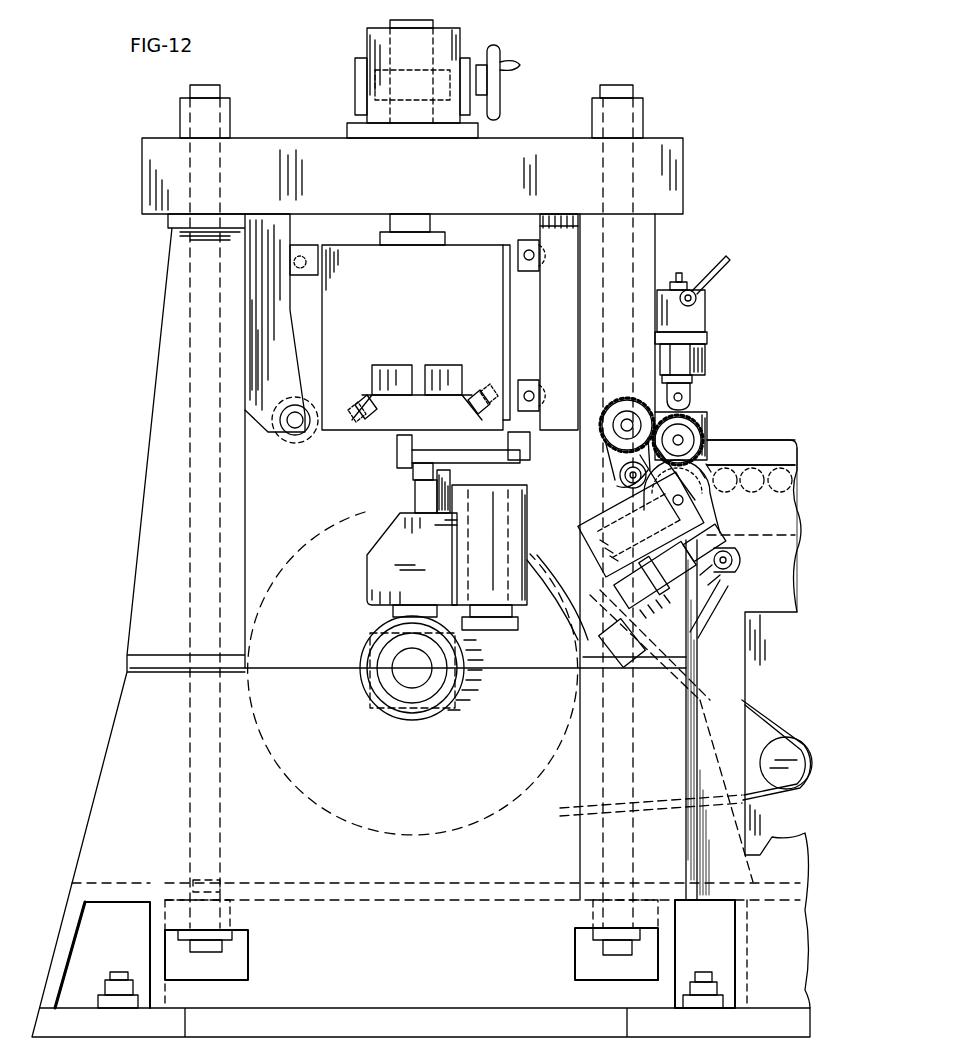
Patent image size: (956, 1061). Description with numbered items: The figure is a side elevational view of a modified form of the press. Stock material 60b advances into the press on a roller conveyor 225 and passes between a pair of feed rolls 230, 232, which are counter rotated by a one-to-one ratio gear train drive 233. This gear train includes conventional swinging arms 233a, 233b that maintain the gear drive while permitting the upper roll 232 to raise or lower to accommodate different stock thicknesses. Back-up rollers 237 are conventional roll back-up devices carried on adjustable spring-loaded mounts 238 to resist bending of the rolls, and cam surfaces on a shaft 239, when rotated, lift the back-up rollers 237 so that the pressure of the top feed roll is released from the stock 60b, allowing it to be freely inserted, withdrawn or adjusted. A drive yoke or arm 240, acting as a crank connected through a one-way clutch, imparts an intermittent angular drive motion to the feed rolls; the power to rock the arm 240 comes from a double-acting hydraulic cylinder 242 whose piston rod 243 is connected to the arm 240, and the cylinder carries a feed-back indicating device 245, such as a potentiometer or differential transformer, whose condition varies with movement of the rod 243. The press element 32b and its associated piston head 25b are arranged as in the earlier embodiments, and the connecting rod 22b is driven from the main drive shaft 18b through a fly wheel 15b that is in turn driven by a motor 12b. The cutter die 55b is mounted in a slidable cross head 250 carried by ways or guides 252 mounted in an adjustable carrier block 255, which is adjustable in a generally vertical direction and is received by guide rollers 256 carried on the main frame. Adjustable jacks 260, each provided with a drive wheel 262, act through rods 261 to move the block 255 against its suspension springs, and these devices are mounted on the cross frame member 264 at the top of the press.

The adjustable jack 260 is at (372, 55).
The drive wheel 262 is at (494, 52).
The cross frame member 264 is at (297, 150).
The rod 261 is at (415, 222).
The guide roller 256 is at (308, 248).
The adjustable carrier block 255 is at (425, 290).
The ways or guides 252 is at (372, 398).
The slidable cross head 250 is at (445, 422).
The cutter die 55b is at (397, 452).
The press element 32b is at (413, 468).
The piston head 25b is at (425, 492).
The connecting rod 22b is at (378, 612).
The main drive shaft 18b is at (405, 680).
The fly wheel 15b is at (300, 553).
The adjustable spring-loaded mount 238 is at (719, 324).
The shaft 239 is at (698, 300).
The back-up roller 237 is at (692, 397).
The gear train drive 233 is at (602, 408).
The upper feed roll 232 is at (707, 440).
The swinging arm 233a is at (620, 470).
The swinging arm 233b is at (645, 417).
The feed roll 230 is at (716, 514).
The drive yoke or arm 240 is at (735, 555).
The piston rod 243 is at (740, 622).
The feed-back indicating device 245 is at (690, 632).
The double-acting hydraulic cylinder 242 is at (640, 655).
The motor 12b is at (800, 740).
The stock material 60b is at (805, 460).
The roller conveyor 225 is at (804, 494).